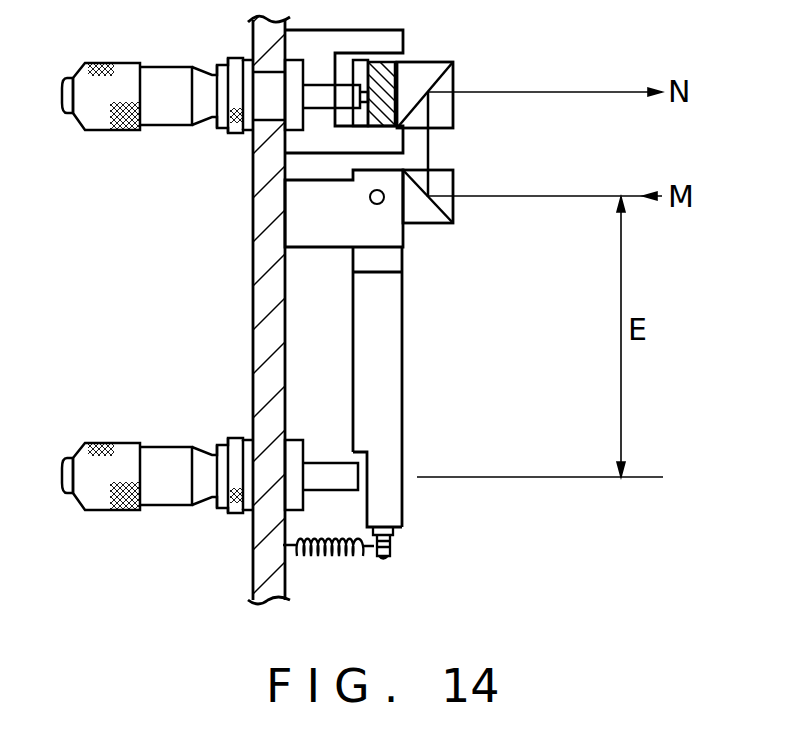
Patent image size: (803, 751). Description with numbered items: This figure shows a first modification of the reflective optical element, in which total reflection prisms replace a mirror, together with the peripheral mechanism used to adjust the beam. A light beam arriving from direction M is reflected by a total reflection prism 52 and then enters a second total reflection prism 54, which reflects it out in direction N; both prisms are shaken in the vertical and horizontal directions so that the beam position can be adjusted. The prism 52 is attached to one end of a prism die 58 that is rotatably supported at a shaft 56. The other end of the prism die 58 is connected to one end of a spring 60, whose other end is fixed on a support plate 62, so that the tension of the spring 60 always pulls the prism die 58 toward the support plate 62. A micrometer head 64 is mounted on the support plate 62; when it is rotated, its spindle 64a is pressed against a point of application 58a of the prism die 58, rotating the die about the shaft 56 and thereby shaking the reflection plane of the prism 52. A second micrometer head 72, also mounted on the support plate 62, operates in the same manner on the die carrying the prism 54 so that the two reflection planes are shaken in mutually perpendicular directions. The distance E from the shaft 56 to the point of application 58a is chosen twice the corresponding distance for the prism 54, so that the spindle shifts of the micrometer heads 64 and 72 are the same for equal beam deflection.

The total reflection prism 52 is at (453, 203).
The total reflection prism 54 is at (453, 77).
The shaft 56 is at (381, 204).
The prism die 58 is at (388, 383).
The point of application 58a is at (363, 477).
The spring 60 is at (337, 558).
The support plate 62 is at (253, 313).
The micrometer head 64 is at (142, 443).
The spindle 64a is at (323, 470).
The micrometer head 72 is at (133, 131).